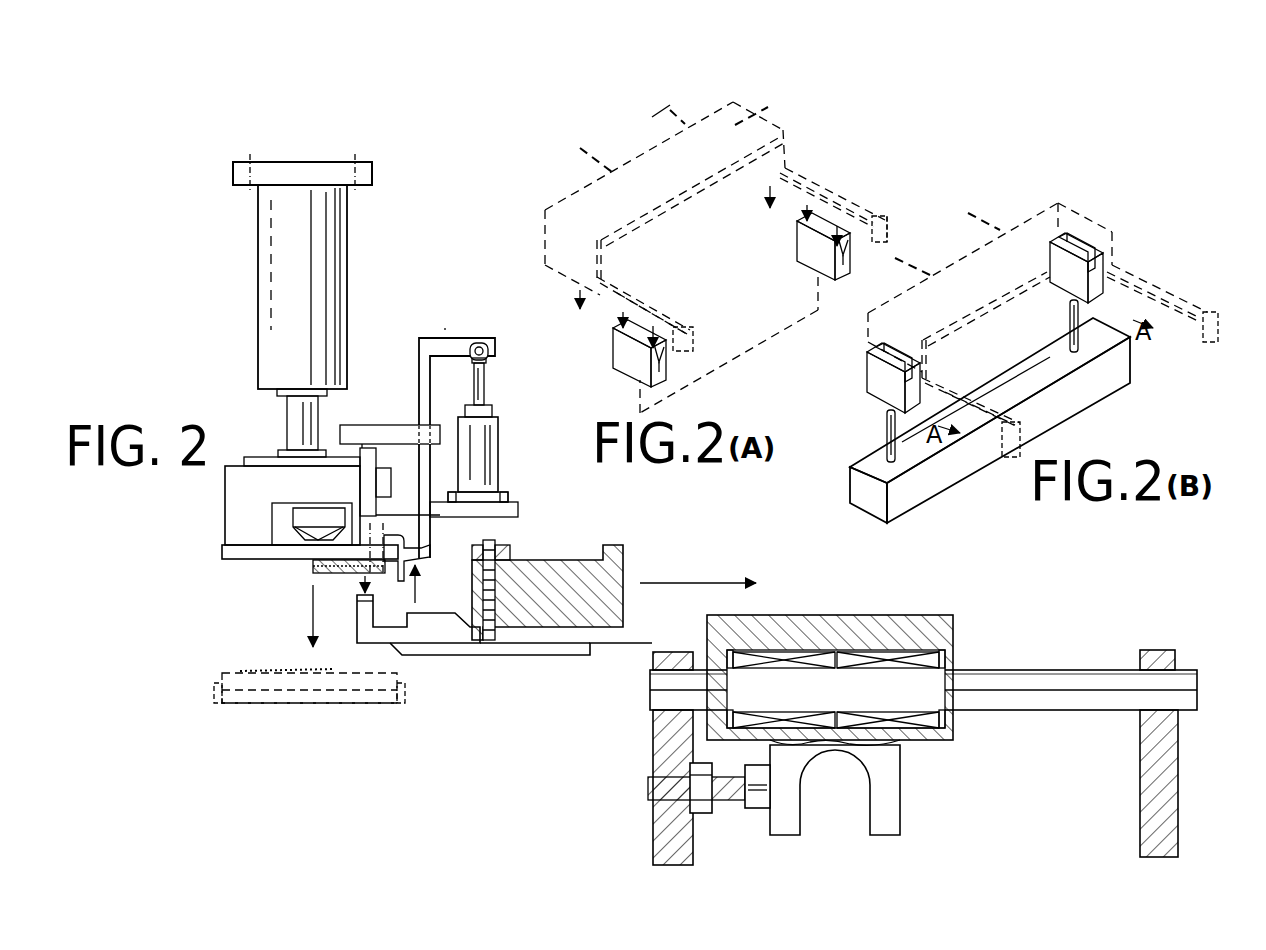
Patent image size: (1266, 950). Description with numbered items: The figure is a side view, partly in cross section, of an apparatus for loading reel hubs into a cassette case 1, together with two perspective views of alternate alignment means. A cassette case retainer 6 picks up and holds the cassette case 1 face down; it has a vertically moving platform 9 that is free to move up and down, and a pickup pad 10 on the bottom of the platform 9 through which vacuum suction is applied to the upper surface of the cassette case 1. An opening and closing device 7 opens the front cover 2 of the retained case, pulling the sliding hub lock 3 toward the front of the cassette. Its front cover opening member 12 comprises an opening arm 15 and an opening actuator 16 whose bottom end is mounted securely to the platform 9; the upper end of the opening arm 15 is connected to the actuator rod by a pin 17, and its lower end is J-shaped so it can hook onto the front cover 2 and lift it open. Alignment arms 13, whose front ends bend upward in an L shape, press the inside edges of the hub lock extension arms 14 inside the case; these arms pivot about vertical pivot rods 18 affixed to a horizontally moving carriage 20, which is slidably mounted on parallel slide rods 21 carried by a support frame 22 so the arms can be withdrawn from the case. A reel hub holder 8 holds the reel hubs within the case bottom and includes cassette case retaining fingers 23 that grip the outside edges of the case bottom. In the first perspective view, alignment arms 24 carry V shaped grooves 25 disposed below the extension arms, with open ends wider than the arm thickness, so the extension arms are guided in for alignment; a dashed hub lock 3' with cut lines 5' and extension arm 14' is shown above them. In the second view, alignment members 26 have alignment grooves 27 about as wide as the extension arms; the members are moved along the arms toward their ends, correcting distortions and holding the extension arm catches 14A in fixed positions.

In FIG. 2, the cassette case 1 is at (336, 273).
In FIG. 2, the front cover 2 is at (392, 536).
In FIG. 2, the hub lock 3 is at (332, 583).
In FIG. 2A, the housing block 3' is at (681, 257).
In FIG. 2B, the housing block 3' is at (990, 292).
In FIG. 2A, the cut lines 5' is at (674, 131).
In FIG. 2B, the cut lines 5' is at (941, 241).
In FIG. 2, the cassette case retainer 6 is at (186, 507).
In FIG. 2, the opening and closing device 7 is at (534, 510).
In FIG. 2, the reel hub holder 8 is at (330, 703).
In FIG. 2, the vertically moving platform 9 is at (259, 506).
In FIG. 2, the pickup pad 10 is at (312, 527).
In FIG. 2, the front cover opening member 12 is at (446, 328).
In FIG. 2, the alignment arms 13 is at (372, 632).
In FIG. 2, the hub lock extension arms 14 is at (349, 606).
In FIG. 2A, the rail strip 14' is at (732, 248).
In FIG. 2B, the rail strip 14' is at (1064, 345).
In FIG. 2A, the extension arm catches 14A is at (870, 222).
In FIG. 2B, the extension arm catches 14A is at (1210, 312).
In FIG. 2, the opening arm 15 is at (419, 383).
In FIG. 2, the opening actuator 16 is at (495, 443).
In FIG. 2, the pin 17 is at (489, 349).
In FIG. 2, the vertical pivot rods 18 is at (506, 600).
In FIG. 2, the horizontally moving carriage 20 is at (572, 652).
In FIG. 2, the slide rods 21 is at (1031, 681).
In FIG. 2, the support frame 22 is at (656, 740).
In FIG. 2, the cassette case retaining fingers 23 is at (214, 688).
In FIG. 2A, the alignment arms 24 is at (622, 368).
In FIG. 2A, the V shaped grooves 25 is at (638, 335).
In FIG. 2B, the alignment members 26 is at (875, 385).
In FIG. 2B, the alignment grooves 27 is at (882, 360).